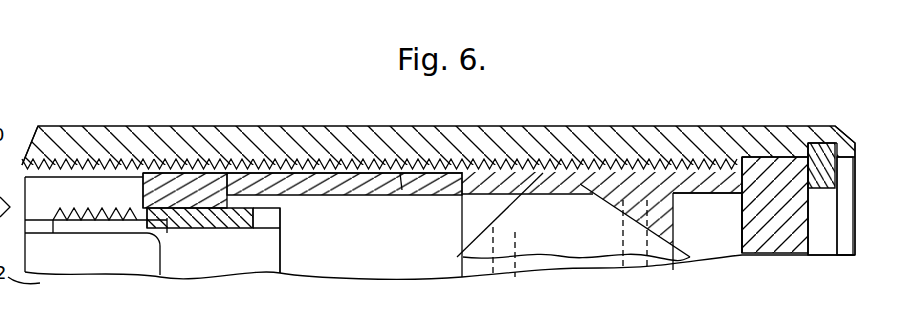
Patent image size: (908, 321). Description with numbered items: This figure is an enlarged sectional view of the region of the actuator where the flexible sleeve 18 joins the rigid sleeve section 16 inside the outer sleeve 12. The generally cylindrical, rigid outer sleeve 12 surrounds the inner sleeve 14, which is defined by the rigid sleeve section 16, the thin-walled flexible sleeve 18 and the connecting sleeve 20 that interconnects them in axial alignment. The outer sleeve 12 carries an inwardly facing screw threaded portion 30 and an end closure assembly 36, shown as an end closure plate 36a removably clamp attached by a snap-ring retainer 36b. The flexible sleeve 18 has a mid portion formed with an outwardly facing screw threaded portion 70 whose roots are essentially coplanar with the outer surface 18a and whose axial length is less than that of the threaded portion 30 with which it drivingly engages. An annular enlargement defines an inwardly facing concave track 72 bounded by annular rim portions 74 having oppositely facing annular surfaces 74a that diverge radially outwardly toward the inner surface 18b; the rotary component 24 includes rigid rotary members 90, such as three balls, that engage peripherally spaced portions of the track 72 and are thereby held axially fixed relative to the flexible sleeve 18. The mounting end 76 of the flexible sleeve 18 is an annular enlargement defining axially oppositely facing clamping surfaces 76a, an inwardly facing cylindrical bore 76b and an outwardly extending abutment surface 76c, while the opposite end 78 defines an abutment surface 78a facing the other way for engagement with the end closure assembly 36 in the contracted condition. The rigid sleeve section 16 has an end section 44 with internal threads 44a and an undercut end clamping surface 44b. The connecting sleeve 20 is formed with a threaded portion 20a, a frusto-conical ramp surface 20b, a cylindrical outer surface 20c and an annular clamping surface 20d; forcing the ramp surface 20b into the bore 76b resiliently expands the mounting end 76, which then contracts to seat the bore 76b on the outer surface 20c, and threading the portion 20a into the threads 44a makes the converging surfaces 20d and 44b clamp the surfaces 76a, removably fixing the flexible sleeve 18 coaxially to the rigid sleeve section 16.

The outer sleeve 12 is at (0, 61).
The inner sleeve 14 is at (108, 148).
The rigid sleeve section 16 is at (82, 256).
The flexible sleeve 18 is at (313, 165).
The outer surface 18a is at (402, 190).
The inner surface 18b is at (449, 194).
The connecting sleeve 20 is at (280, 236).
The threaded portion 20a is at (103, 206).
The ramp surface 20b is at (270, 207).
The outer surface 20c is at (262, 240).
The clamping surface 20d is at (302, 151).
The rotary component 24 is at (438, 255).
The threaded portion 30 is at (332, 167).
The end closure assembly 36 is at (826, 98).
The end closure plate 36a is at (805, 220).
The snap-ring retainer 36b is at (822, 182).
The end section 44 is at (93, 163).
The internal threads 44a is at (95, 226).
The end clamping surface 44b is at (178, 163).
The screw threaded portion 70 is at (578, 167).
The track 72 is at (550, 165).
The annular rim portions 74 is at (620, 195).
The annular surfaces 74a is at (515, 212).
The mounting end 76 is at (197, 163).
The clamping surfaces 76a is at (157, 216).
The bore 76b is at (190, 212).
The abutment surface 76c is at (140, 162).
The opposite end 78 is at (706, 165).
The abutment surface 78a is at (755, 163).
The rotary members 90 is at (615, 236).